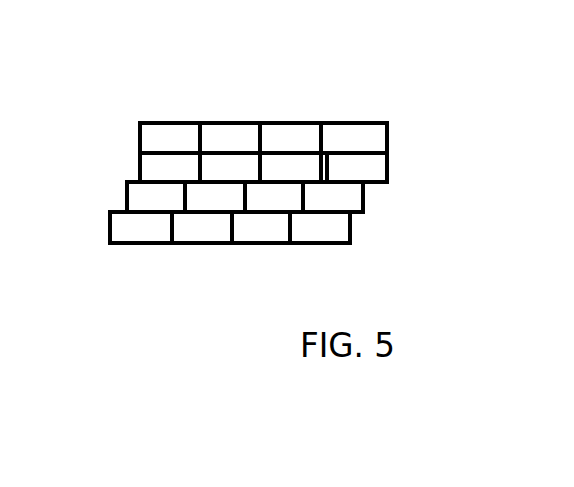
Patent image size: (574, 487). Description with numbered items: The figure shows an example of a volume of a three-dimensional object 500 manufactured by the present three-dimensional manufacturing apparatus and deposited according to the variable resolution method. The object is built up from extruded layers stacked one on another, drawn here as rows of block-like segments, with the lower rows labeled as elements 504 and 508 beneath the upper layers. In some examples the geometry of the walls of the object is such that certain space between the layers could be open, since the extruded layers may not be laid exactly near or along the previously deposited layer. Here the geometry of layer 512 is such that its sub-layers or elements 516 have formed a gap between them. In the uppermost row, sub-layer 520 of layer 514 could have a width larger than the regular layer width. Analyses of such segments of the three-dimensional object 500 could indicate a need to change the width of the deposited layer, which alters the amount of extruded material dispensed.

The 3D object 500 is at (210, 84).
The first row shielding block 504 is at (122, 230).
The second row shielding block 508 is at (140, 197).
The layer 512 is at (158, 165).
The layer 514 is at (173, 132).
The sub-layers or elements 516 is at (360, 172).
The sub-layer 520 is at (342, 140).